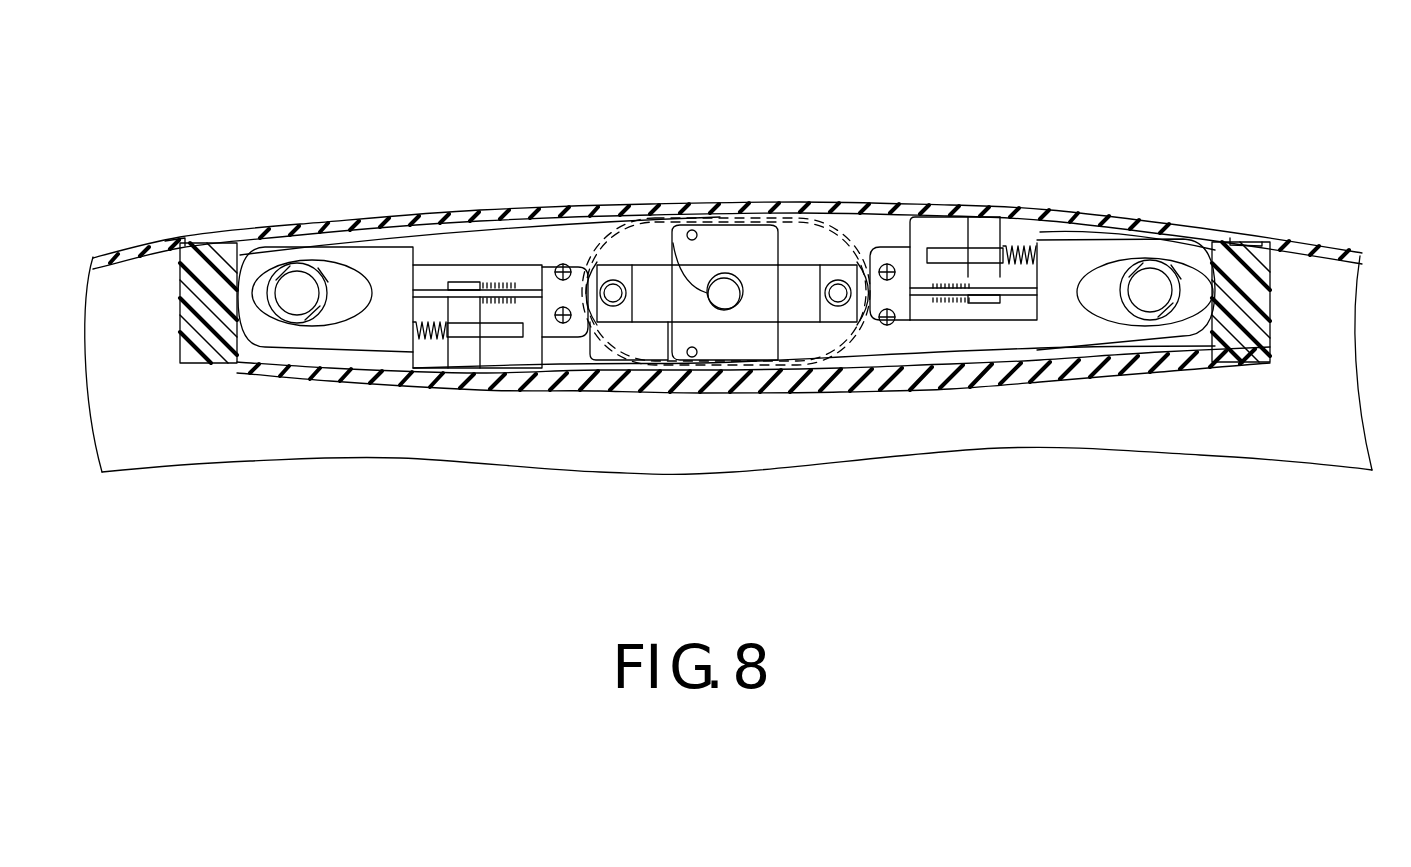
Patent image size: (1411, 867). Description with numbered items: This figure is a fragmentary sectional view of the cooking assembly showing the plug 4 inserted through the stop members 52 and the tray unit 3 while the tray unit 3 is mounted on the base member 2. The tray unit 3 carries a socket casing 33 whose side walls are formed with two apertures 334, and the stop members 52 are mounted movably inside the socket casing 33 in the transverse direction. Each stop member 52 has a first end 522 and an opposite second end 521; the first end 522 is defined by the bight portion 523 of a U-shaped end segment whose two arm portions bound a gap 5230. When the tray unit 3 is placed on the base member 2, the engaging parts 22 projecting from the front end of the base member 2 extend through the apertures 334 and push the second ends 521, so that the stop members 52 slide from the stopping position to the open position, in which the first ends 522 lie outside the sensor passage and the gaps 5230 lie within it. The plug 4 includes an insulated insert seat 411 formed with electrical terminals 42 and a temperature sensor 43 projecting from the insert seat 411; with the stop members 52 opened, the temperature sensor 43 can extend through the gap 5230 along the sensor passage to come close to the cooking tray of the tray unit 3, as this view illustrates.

The base member 2 is at (1343, 240).
The tray unit 3 is at (1117, 192).
The plug 4 is at (605, 163).
The engaging parts 22 is at (216, 285).
The socket casing 33 is at (333, 208).
The electrical terminals 42 is at (613, 290).
The temperature sensor 43 is at (672, 245).
The stop members 52 is at (428, 242).
The apertures 334 is at (222, 238).
The insert seat 411 is at (835, 220).
The second ends 521 is at (247, 287).
The first ends 522 is at (790, 265).
The bight portion 523 is at (690, 312).
The gap 5230 is at (727, 312).